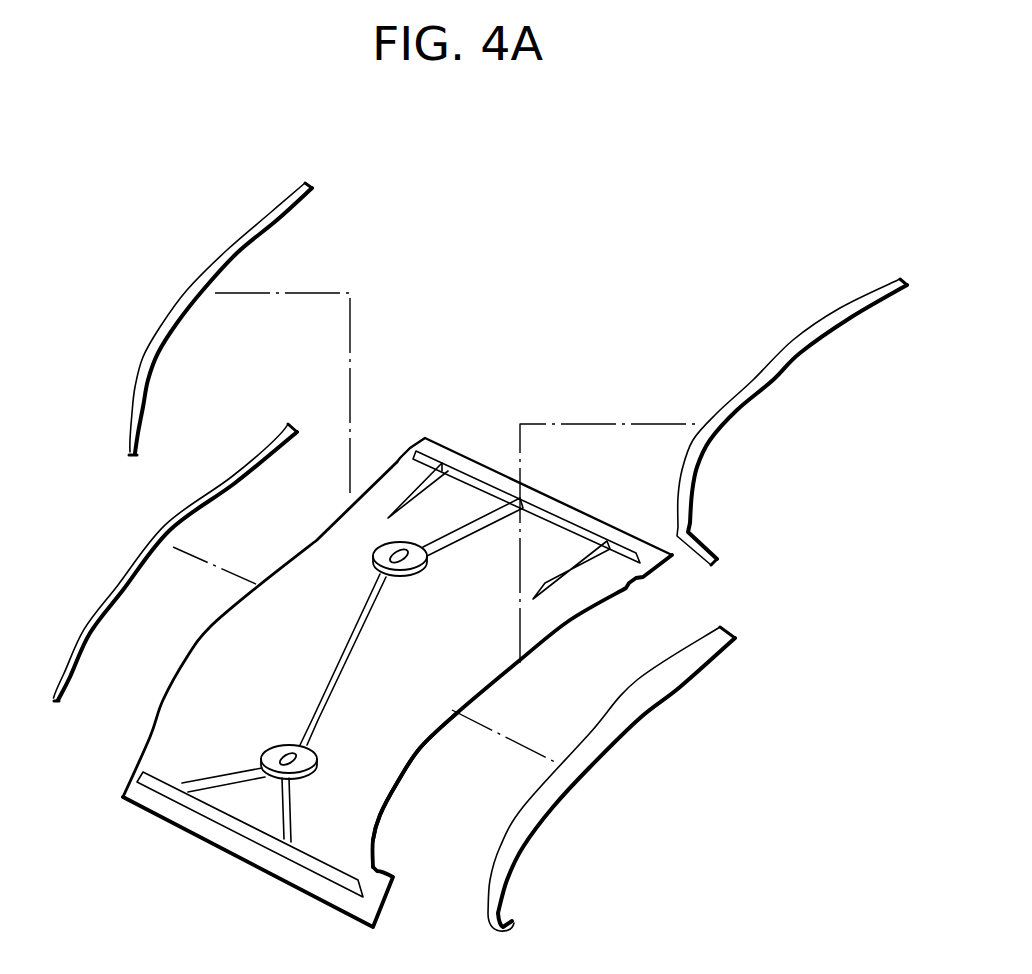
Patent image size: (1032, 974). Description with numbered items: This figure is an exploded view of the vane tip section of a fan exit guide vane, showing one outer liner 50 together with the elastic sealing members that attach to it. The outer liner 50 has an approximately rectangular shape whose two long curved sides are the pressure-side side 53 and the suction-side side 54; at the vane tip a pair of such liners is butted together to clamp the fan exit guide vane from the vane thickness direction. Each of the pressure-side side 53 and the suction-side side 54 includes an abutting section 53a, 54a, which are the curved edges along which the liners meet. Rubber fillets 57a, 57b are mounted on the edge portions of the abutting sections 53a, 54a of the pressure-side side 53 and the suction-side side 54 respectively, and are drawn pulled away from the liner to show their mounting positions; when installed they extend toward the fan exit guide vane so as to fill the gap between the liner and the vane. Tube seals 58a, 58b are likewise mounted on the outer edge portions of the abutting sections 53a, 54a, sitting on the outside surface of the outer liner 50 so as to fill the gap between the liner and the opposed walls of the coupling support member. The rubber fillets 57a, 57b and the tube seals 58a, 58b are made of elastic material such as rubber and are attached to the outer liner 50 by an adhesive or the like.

The outer liner 50 is at (378, 661).
The pressure-side side 53 is at (140, 733).
The abutting section 53a is at (185, 659).
The suction-side side 54 is at (600, 607).
The abutting section 54a is at (398, 783).
The rubber fillet 57a is at (172, 527).
The rubber fillet 57b is at (650, 690).
The tube seal 58a is at (227, 252).
The tube seal 58b is at (805, 338).